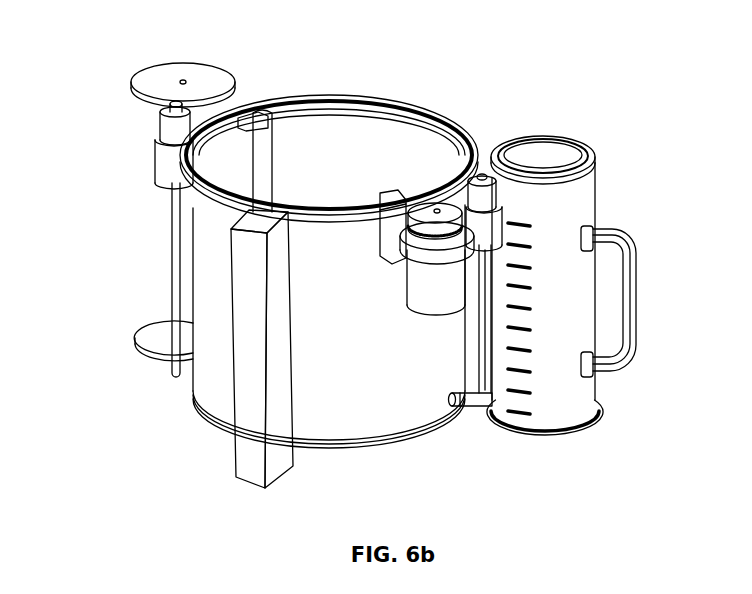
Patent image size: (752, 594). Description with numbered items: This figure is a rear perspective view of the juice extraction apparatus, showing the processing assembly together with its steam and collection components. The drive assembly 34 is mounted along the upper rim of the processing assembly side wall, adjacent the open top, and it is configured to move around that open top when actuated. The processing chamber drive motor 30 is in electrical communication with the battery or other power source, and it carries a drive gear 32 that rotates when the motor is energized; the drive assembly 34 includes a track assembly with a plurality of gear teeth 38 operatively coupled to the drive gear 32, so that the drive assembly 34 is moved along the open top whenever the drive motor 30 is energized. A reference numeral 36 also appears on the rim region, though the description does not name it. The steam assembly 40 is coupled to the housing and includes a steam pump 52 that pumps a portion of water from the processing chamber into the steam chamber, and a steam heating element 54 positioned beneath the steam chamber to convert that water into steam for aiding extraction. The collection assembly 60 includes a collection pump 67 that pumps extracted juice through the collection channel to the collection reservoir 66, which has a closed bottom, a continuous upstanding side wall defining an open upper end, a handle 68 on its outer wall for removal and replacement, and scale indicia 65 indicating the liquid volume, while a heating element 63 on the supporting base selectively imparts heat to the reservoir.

The processing chamber drive motor 30 is at (432, 298).
The drive gear 32 is at (420, 220).
The drive assembly 34 is at (448, 92).
The bucket rim 36 is at (343, 130).
The gear teeth 38 is at (272, 102).
The steam assembly 40 is at (112, 98).
The steam pump 52 is at (160, 127).
The steam heating element 54 is at (137, 352).
The collection assembly 60 is at (612, 151).
The heating element 63 is at (568, 437).
The scale indicia 65 is at (518, 414).
The collection reservoir 66 is at (580, 197).
The collection pump 67 is at (483, 172).
The handle 68 is at (638, 298).